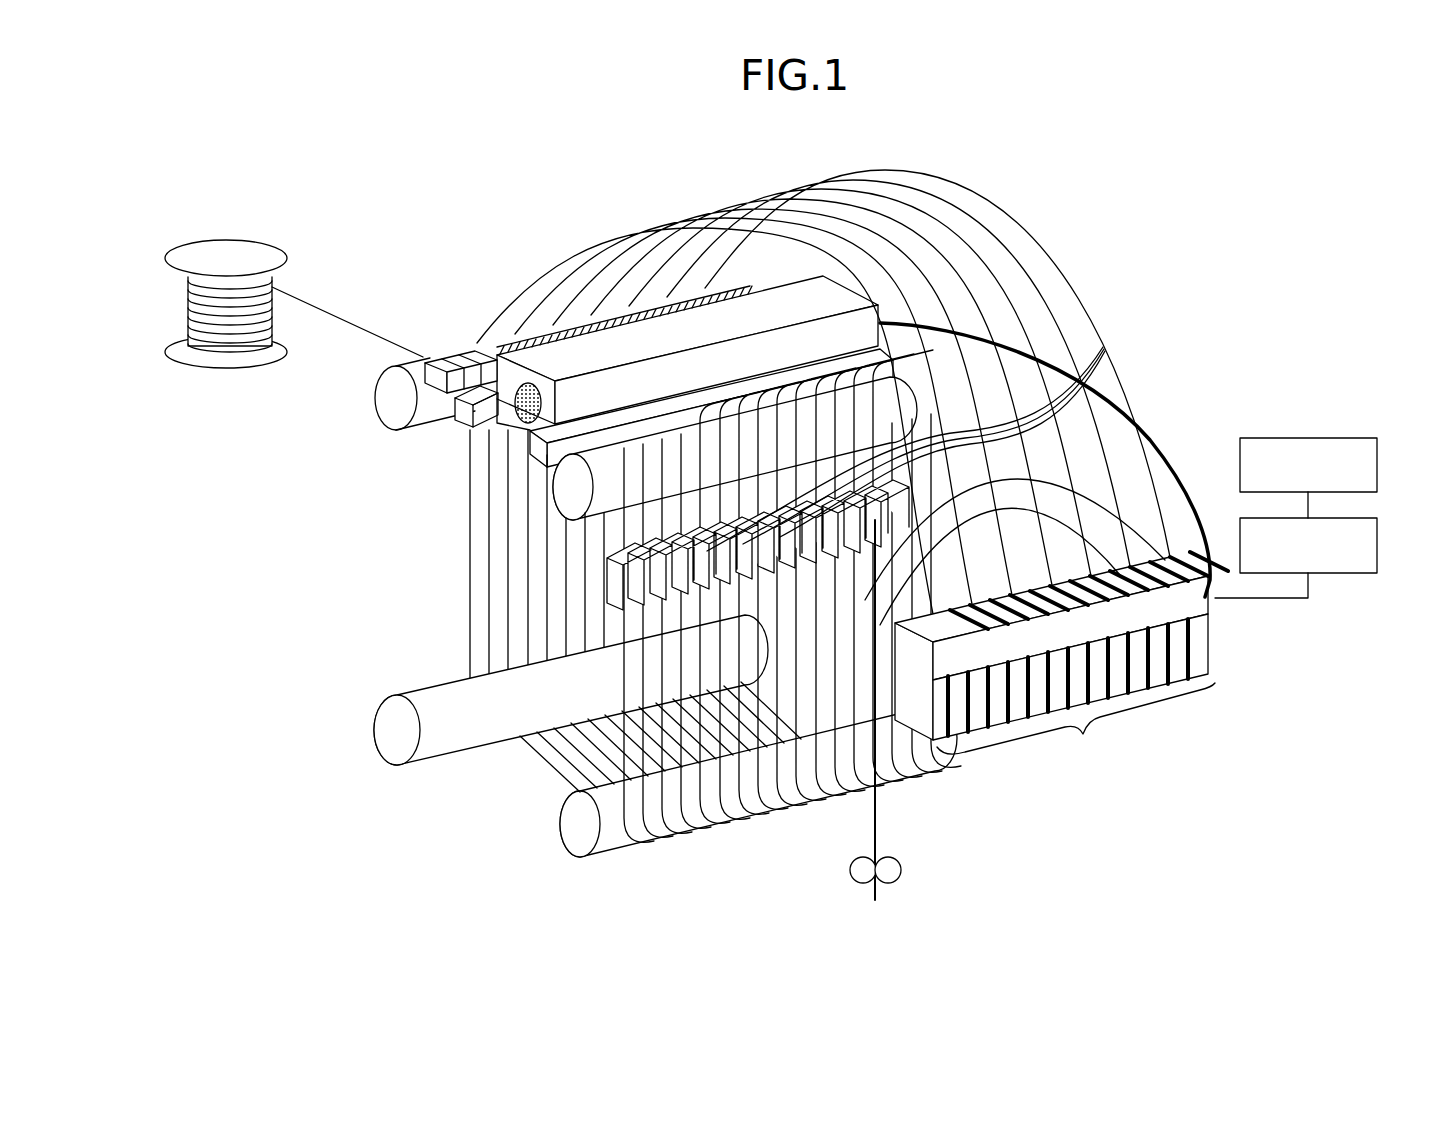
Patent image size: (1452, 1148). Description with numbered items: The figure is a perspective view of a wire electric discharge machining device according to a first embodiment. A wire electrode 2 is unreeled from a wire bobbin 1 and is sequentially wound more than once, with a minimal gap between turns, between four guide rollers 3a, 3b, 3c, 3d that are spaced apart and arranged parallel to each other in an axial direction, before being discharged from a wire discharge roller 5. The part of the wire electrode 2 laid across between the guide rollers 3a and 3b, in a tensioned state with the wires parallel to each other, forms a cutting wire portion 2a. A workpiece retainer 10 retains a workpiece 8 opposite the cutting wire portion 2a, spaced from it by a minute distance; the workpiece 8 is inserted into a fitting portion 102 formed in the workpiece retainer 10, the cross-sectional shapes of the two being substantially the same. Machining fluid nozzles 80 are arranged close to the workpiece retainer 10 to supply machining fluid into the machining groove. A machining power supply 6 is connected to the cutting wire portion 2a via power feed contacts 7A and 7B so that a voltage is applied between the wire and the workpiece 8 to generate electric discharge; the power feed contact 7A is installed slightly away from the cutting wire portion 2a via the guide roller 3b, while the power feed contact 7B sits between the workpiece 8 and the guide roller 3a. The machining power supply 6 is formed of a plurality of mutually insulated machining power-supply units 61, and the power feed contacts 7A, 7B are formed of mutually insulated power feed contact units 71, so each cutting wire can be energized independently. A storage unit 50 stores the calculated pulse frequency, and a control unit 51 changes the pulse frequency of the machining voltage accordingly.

The wire bobbin 1 is at (268, 250).
The wire electrode 2 is at (317, 300).
The cutting wire portion 2a is at (627, 612).
The guide roller 3a is at (392, 400).
The guide roller 3b is at (975, 340).
The guide roller 3c is at (573, 822).
The guide roller 3d is at (395, 730).
The wire discharge roller 5 is at (876, 887).
The machining power supply 6 is at (1100, 660).
The machining power-supply unit 61 is at (1153, 667).
The power feed contact 7A is at (612, 583).
The power feed contact 7B is at (433, 381).
The workpiece 8 is at (462, 398).
The machining fluid nozzle 80 is at (537, 453).
The workpiece retainer 10 is at (608, 345).
The fitting portion 102 is at (528, 383).
The power feed contact unit 71 is at (1104, 347).
The storage unit 50 is at (1378, 466).
The control unit 51 is at (1378, 547).